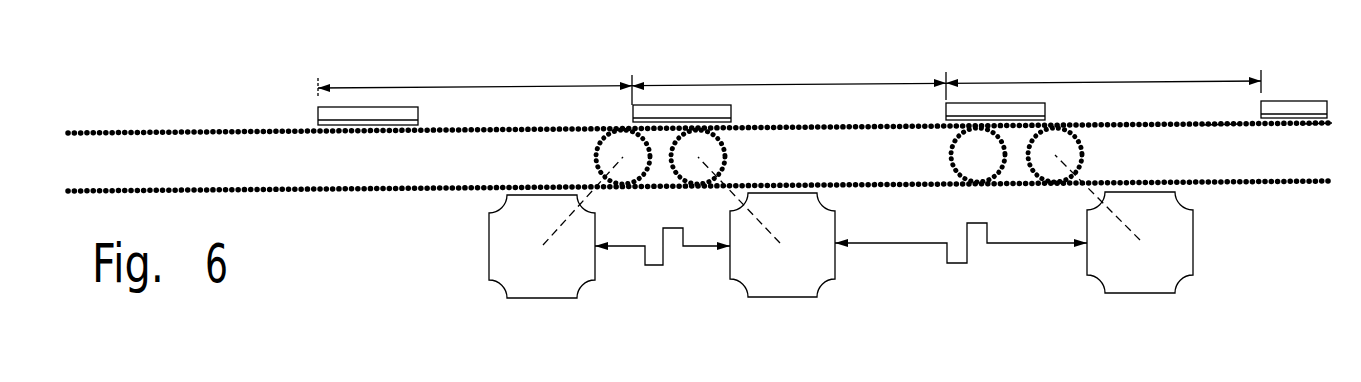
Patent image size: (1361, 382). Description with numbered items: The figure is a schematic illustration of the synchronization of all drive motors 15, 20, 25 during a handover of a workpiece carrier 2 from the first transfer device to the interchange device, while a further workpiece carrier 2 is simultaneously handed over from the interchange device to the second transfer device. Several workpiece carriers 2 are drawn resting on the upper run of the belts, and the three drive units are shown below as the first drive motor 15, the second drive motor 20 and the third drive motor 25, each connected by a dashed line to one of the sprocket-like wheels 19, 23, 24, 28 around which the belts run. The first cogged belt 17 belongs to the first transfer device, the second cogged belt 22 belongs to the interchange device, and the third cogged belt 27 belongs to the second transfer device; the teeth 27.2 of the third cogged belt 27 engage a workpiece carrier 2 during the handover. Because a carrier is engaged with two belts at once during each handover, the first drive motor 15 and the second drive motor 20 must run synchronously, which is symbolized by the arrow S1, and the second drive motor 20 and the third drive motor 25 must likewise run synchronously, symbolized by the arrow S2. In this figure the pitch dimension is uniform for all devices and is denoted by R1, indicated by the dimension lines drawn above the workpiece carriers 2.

The workpiece carrier 2 is at (358, 107).
The first drive motor 15 is at (497, 250).
The first cogged belt 17 is at (178, 131).
The first sprocket 19 is at (616, 140).
The second drive motor 20 is at (835, 265).
The second cogged belt 22 is at (900, 124).
The second sprocket 23 is at (703, 146).
The third sprocket 24 is at (985, 148).
The third drive motor 25 is at (1177, 269).
The third cogged belt 27 is at (1203, 124).
The teeth of the third cogged belt 27.2 is at (1332, 123).
The fourth sprocket 28 is at (1072, 150).
The pitch dimension R1 is at (789, 80).
The synchronization arrow S1 is at (663, 265).
The synchronization arrow S2 is at (967, 263).